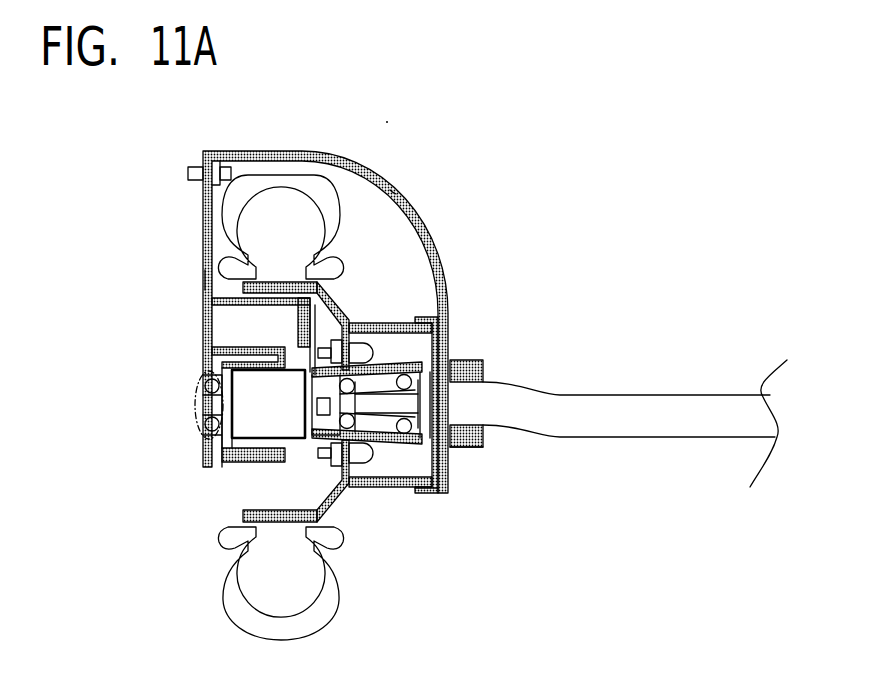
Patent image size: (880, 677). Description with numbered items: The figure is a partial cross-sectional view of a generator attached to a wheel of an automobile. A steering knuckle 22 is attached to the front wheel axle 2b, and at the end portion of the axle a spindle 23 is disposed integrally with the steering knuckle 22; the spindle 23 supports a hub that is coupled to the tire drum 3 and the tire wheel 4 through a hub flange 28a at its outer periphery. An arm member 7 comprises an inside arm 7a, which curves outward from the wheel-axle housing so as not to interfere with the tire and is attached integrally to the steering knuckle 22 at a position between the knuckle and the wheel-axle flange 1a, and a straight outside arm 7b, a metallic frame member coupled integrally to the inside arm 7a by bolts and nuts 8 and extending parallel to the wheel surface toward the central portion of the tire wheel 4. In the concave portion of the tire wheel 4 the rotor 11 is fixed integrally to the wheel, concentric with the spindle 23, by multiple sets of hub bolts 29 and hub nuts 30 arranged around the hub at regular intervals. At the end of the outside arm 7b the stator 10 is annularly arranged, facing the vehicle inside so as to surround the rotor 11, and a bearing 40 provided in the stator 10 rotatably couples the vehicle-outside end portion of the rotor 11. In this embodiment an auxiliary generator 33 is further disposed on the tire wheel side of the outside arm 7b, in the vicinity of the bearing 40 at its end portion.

The arm member 7 is at (278, 148).
The inside arm 7a is at (417, 213).
The outside arm 7b is at (203, 277).
The bolts and nuts 8 is at (186, 178).
The tire wheel 4 is at (342, 522).
The hub nuts 30 is at (340, 321).
The tire drum 3 is at (377, 323).
The wheel-axle flange 1a is at (428, 495).
The hub flange 28a is at (372, 343).
The hub bolts 29 is at (325, 460).
The steering knuckle 22 is at (467, 360).
The spindle 23 is at (415, 413).
The front wheel axle 2b is at (661, 393).
The auxiliary generator 33 is at (250, 317).
The rotor 11 is at (262, 432).
The bearing 40 is at (192, 410).
The stator 10 is at (238, 462).